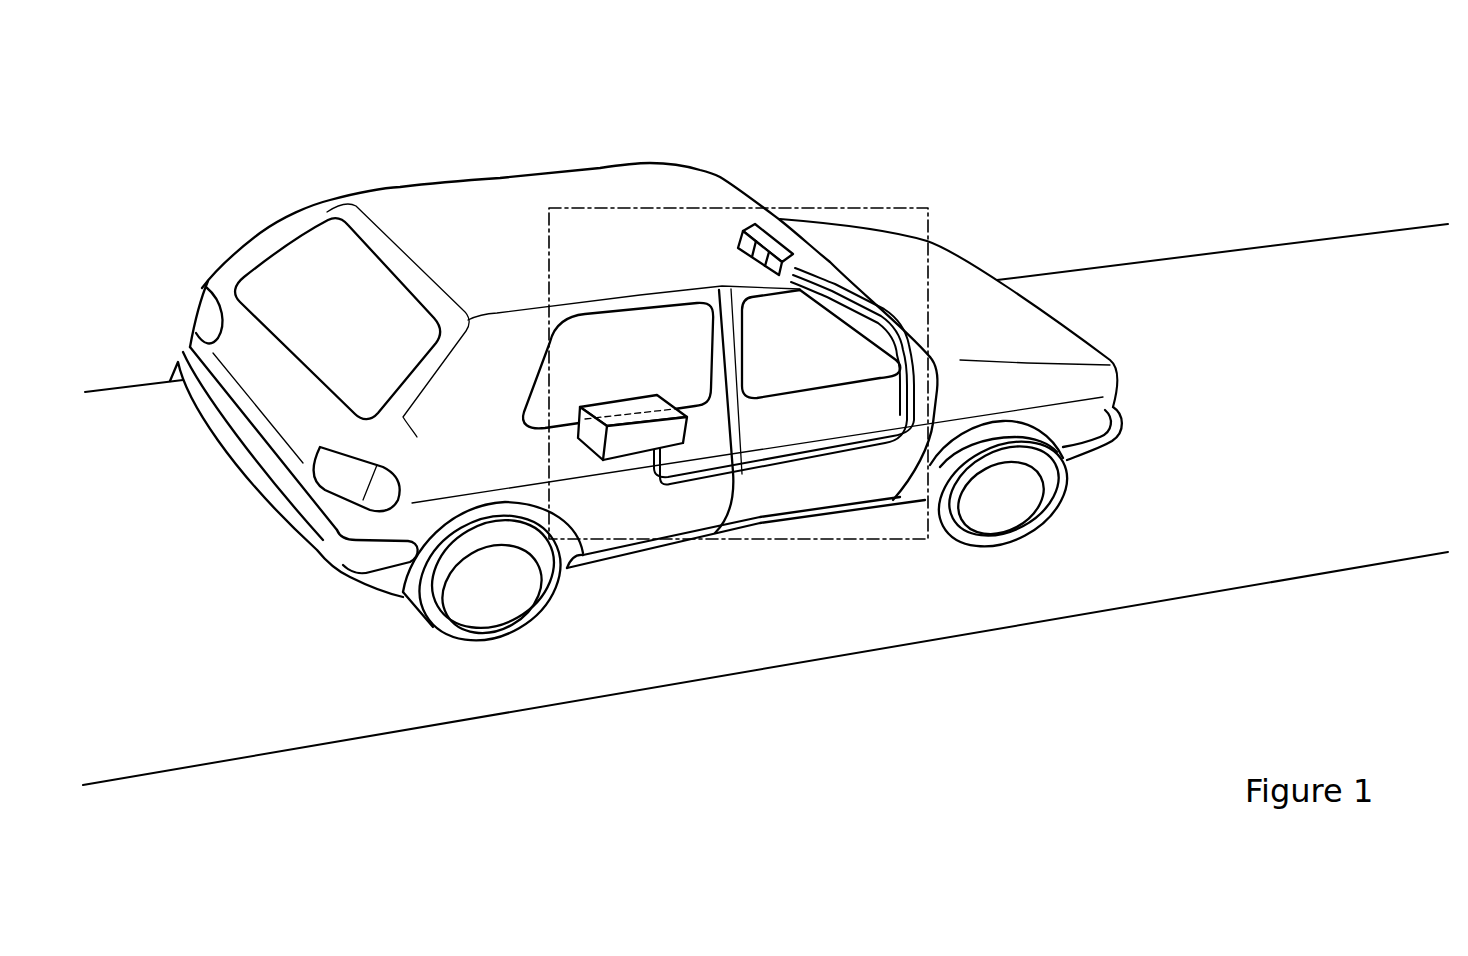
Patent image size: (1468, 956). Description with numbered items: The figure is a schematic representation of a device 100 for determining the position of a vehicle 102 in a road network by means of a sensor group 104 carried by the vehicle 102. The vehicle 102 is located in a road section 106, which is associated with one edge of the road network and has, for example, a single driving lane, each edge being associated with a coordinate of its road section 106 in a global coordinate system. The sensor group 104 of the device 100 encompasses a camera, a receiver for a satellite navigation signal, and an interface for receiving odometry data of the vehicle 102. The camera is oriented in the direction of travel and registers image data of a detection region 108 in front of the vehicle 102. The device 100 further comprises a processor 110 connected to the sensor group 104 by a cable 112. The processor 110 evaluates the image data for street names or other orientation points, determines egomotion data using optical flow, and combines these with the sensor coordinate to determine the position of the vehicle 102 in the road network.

The device 100 is at (817, 541).
The vehicle 102 is at (963, 135).
The sensor group 104 is at (775, 240).
The road section 106 is at (377, 733).
The detection region 108 is at (1433, 285).
The processor 110 is at (629, 410).
The cable 112 is at (862, 312).